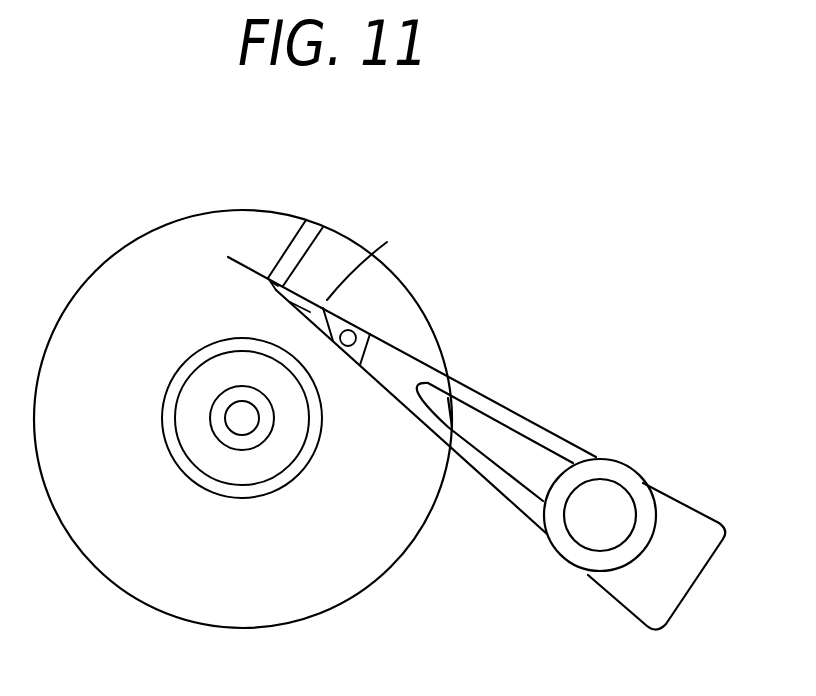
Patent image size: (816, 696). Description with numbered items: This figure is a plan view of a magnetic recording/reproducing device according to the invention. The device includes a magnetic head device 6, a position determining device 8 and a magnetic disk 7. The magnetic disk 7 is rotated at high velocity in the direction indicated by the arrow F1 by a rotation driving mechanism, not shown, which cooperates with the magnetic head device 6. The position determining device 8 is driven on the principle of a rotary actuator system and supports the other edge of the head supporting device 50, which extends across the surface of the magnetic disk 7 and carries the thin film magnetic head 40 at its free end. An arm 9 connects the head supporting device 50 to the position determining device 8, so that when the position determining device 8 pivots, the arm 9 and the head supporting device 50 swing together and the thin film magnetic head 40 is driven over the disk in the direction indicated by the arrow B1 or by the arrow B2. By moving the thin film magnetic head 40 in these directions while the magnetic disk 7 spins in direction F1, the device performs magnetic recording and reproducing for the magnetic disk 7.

The magnetic head device 6 is at (467, 361).
The magnetic disk 7 is at (148, 597).
The position determining device 8 is at (627, 593).
The arm 9 is at (544, 437).
The thin film magnetic head 40 is at (323, 228).
The head supporting device 50 is at (387, 242).
The rotation direction arrow F1 is at (152, 188).
The head drive direction arrow B1 is at (302, 239).
The head drive direction arrow B2 is at (270, 290).